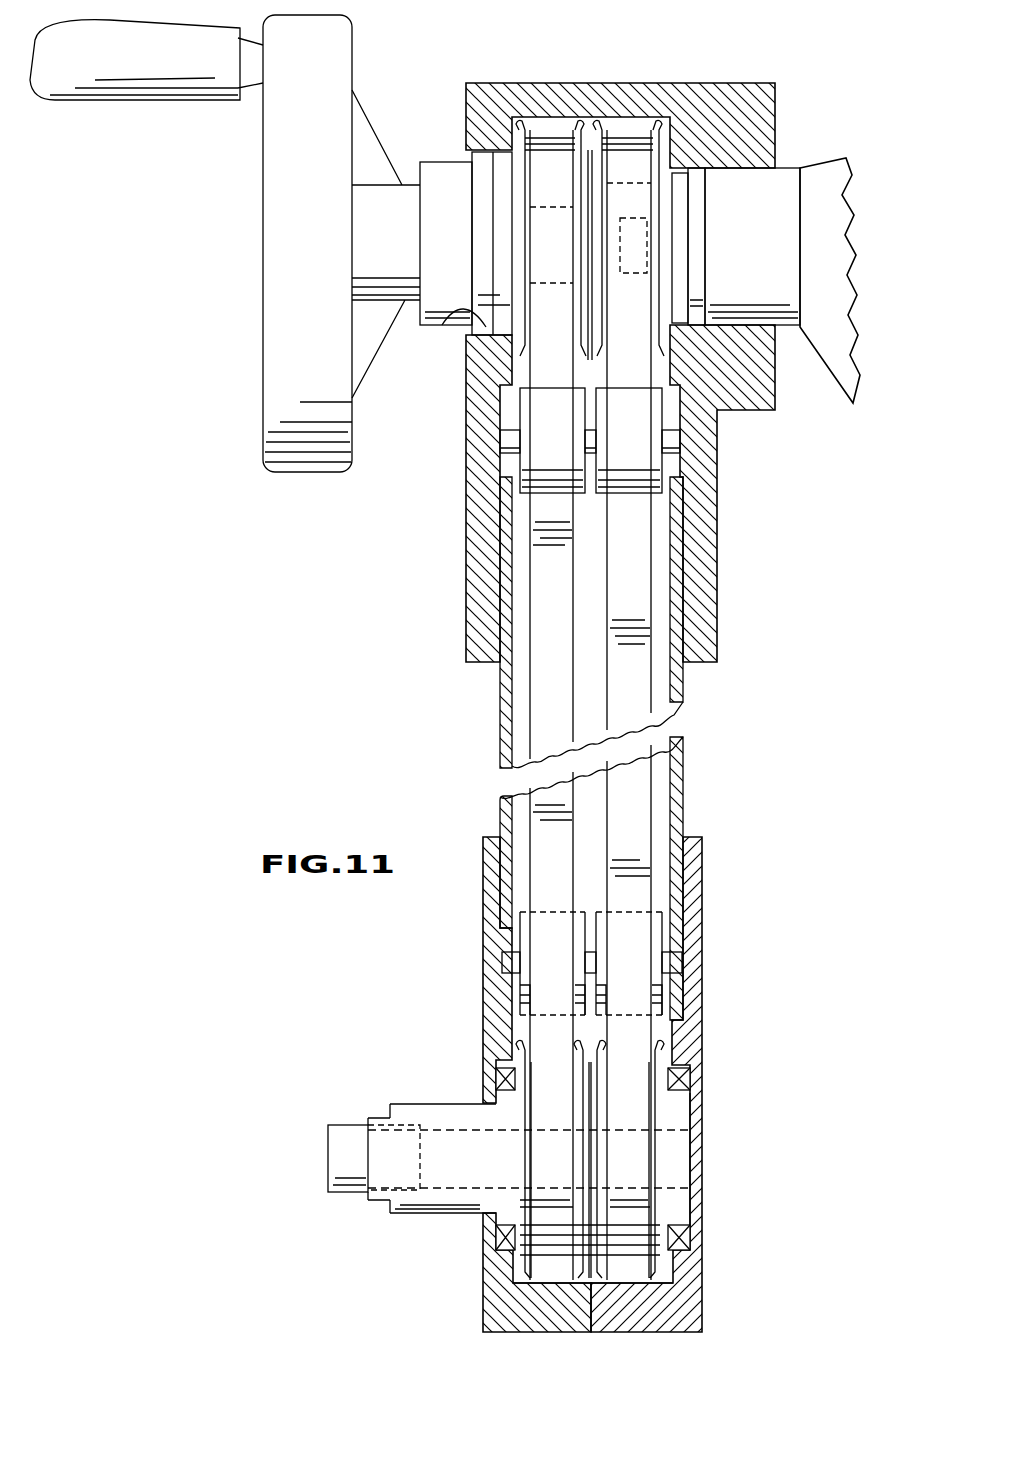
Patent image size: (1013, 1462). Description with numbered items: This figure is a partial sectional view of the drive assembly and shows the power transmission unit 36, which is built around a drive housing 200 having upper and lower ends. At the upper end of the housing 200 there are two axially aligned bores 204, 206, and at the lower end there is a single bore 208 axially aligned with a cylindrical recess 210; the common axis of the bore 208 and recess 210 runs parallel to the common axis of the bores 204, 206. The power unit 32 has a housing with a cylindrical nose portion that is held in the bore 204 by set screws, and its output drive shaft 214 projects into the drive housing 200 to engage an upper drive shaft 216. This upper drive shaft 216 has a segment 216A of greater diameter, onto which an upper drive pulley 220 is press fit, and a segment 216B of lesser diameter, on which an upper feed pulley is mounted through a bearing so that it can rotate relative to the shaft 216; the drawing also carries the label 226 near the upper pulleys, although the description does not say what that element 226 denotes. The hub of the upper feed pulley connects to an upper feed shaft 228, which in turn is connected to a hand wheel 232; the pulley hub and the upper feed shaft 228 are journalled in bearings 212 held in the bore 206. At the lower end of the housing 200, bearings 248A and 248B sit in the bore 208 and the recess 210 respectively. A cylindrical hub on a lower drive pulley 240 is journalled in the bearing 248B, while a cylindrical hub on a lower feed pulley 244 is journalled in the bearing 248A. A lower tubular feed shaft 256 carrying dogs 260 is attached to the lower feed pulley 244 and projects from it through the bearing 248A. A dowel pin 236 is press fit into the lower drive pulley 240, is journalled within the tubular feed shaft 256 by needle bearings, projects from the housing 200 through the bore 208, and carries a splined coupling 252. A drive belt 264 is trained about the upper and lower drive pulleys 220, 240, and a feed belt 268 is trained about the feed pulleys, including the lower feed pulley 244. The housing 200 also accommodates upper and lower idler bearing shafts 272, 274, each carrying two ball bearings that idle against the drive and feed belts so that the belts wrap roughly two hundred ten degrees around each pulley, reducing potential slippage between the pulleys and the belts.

The power unit 32 is at (810, 164).
The power transmission unit 36 is at (718, 774).
The drive housing 200 is at (718, 620).
The bore 204 is at (730, 318).
The bore 206 is at (442, 326).
The bore 208 is at (510, 1197).
The cylindrical recess 210 is at (683, 1218).
The bearings 212 is at (485, 252).
The output drive shaft 214 is at (698, 253).
The upper drive shaft 216 is at (684, 158).
The segment of greater diameter 216A is at (630, 183).
The segment of lesser diameter 216B is at (562, 205).
The upper drive pulley 220 is at (612, 125).
The cup retainer 226 is at (531, 125).
The upper feed shaft 228 is at (437, 162).
The hand wheel 232 is at (263, 192).
The dowel pin 236 is at (645, 1122).
The lower drive pulley 240 is at (683, 1050).
The lower feed pulley 244 is at (505, 1052).
The bearing 248A is at (495, 1085).
The bearing 248B is at (690, 1087).
The splined coupling 252 is at (340, 1194).
The lower tubular feed shaft 256 is at (417, 1205).
The dogs 260 is at (378, 1118).
The drive belt 264 is at (677, 688).
The feed belt 268 is at (522, 698).
The upper idler bearing shaft 272 is at (678, 444).
The lower idler bearing shaft 274 is at (676, 963).